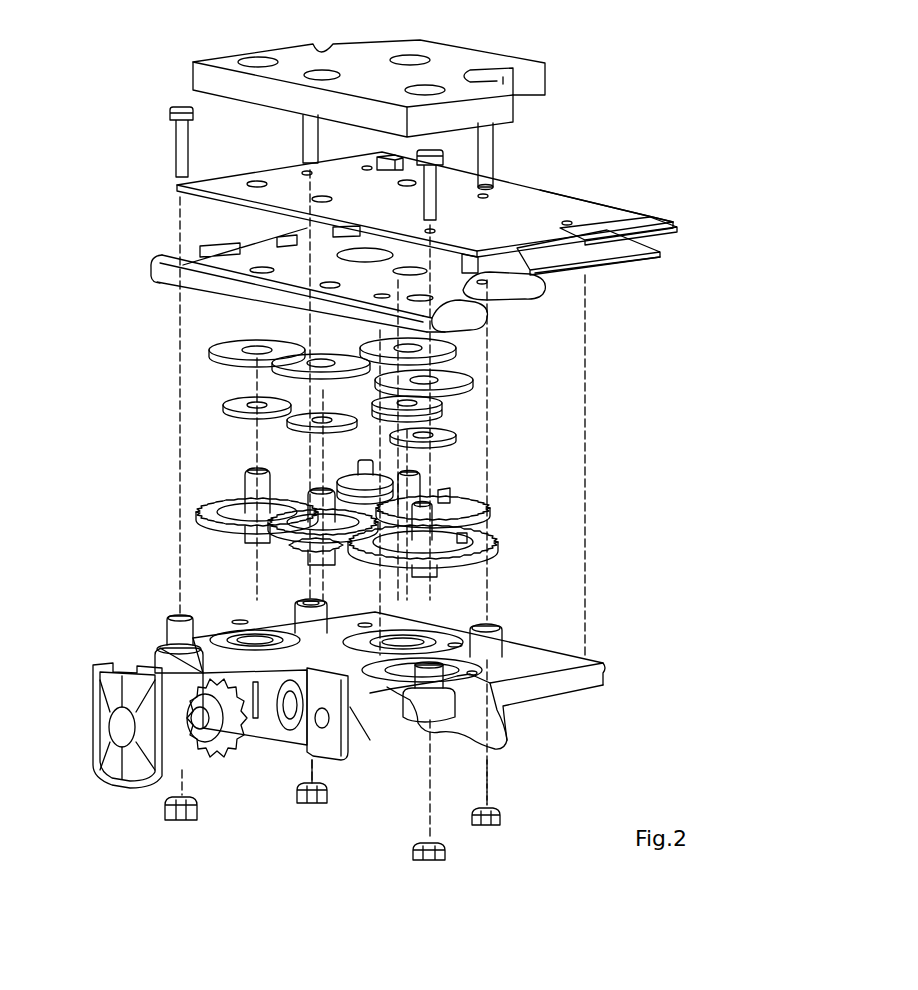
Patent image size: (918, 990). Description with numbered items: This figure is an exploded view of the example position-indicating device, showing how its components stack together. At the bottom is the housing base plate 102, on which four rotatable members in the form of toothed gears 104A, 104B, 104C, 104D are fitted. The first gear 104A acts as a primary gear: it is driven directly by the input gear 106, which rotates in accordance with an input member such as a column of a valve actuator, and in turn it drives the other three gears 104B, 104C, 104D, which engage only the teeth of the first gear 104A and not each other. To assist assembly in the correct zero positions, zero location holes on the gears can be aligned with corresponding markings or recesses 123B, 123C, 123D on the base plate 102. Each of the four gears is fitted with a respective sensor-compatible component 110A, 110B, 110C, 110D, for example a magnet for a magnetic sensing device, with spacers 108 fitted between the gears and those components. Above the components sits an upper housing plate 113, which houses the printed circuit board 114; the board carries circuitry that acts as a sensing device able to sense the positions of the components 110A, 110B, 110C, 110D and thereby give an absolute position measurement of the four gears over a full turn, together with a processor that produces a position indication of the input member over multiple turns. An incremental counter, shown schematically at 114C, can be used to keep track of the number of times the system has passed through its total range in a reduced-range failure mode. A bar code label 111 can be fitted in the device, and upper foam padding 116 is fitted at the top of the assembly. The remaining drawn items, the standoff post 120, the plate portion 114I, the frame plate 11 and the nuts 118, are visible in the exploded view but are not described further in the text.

The upper foam padding 116 is at (552, 68).
The standoff post 120 is at (500, 155).
The printed circuit board 114 is at (174, 186).
The incremental counter 114C is at (620, 210).
The insert plate 114I is at (678, 228).
The frame plate 11 is at (585, 247).
The bar code label 111 is at (622, 264).
The upper housing plate 113 is at (549, 297).
The sensor-compatible component 110A is at (326, 360).
The sensor-compatible component 110B is at (207, 345).
The sensor-compatible component 110C is at (460, 352).
The sensor-compatible component 110D is at (472, 377).
The spacers 108 is at (462, 433).
The first gear 104A is at (277, 550).
The gear 104B is at (202, 508).
The gear 104C is at (430, 480).
The gear 104D is at (512, 537).
The housing base plate 102 is at (606, 660).
The marking/recess 123B is at (232, 640).
The marking/recess 123C is at (468, 645).
The marking/recess 123D is at (488, 737).
The input gear 106 is at (212, 748).
The nut 118 is at (506, 810).